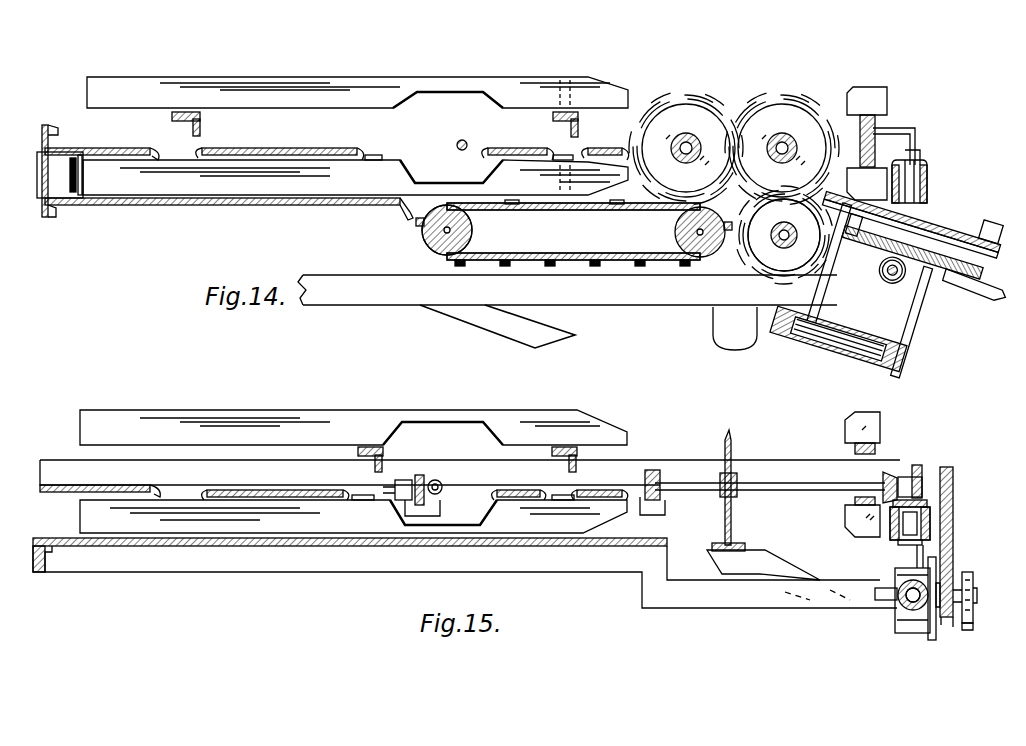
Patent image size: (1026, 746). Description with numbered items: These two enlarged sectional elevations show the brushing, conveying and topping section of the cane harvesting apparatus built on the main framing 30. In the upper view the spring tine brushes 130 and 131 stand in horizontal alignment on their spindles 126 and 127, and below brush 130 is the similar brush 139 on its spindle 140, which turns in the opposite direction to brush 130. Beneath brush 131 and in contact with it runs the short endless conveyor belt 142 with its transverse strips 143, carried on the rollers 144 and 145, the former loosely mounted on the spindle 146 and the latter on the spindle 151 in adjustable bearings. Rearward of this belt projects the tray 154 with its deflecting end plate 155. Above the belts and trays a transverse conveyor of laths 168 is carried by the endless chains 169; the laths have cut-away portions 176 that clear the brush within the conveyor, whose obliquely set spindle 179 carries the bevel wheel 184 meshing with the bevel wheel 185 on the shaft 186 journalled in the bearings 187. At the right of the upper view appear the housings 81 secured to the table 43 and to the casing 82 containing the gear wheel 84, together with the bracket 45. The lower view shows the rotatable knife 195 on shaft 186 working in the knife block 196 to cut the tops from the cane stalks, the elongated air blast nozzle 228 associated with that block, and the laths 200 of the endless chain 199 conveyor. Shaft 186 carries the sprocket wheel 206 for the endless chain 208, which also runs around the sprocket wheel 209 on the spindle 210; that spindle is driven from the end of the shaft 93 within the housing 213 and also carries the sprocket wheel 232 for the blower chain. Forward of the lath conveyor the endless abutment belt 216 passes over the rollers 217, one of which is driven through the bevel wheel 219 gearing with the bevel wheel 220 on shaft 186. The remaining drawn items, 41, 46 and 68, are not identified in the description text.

In FIG. 14, the main framing 30 is at (377, 289).
In FIG. 15, the main framing 30 is at (267, 558).
In FIG. 14, the pointed bar 41 is at (977, 296).
In FIG. 14, the table 43 is at (977, 223).
In FIG. 14, the bracket 45 is at (927, 265).
In FIG. 14, the shaft 46 is at (892, 282).
In FIG. 15, the shaft 46 is at (900, 604).
In FIG. 14, the rail 68 is at (920, 215).
In FIG. 14, the housing 81 is at (830, 296).
In FIG. 14, the casing 82 is at (893, 352).
In FIG. 14, the gear wheel 84 is at (810, 348).
In FIG. 14, the shaft 93 is at (852, 283).
In FIG. 15, the shaft 93 is at (911, 600).
In FIG. 14, the spindle 126 is at (784, 140).
In FIG. 14, the spindle 127 is at (690, 140).
In FIG. 14, the spring tine brush 130 is at (815, 103).
In FIG. 14, the spring tine brush 131 is at (673, 99).
In FIG. 14, the brush 139 is at (760, 265).
In FIG. 14, the spindle 140 is at (770, 240).
In FIG. 14, the endless conveyor belt 142 is at (605, 208).
In FIG. 14, the transverse strips 143 is at (550, 262).
In FIG. 14, the roller 144 is at (684, 232).
In FIG. 14, the roller 145 is at (472, 233).
In FIG. 14, the spindle 146 is at (694, 256).
In FIG. 14, the spindle 151 is at (440, 234).
In FIG. 14, the tray 154 is at (217, 205).
In FIG. 14, the deflecting end plate 155 is at (82, 180).
In FIG. 14, the laths 168 is at (103, 92).
In FIG. 15, the laths 168 is at (113, 425).
In FIG. 14, the endless chains 169 is at (172, 113).
In FIG. 15, the endless chains 169 is at (567, 445).
In FIG. 14, the cut-away portions 176 is at (422, 102).
In FIG. 15, the cut-away portions 176 is at (435, 430).
In FIG. 15, the spindle 179 is at (438, 485).
In FIG. 14, the bevel wheel 184 is at (465, 140).
In FIG. 15, the bevel wheel 184 is at (441, 494).
In FIG. 15, the bevel wheel 185 is at (419, 474).
In FIG. 15, the shaft 186 is at (692, 483).
In FIG. 15, the bearings 187 is at (642, 470).
In FIG. 15, the rotatable knife 195 is at (732, 432).
In FIG. 15, the knife block 196 is at (730, 543).
In FIG. 14, the endless chain 199 is at (880, 124).
In FIG. 14, the laths 200 is at (867, 92).
In FIG. 15, the laths 200 is at (857, 425).
In FIG. 15, the sprocket wheel 206 is at (952, 480).
In FIG. 15, the endless chain 208 is at (953, 557).
In FIG. 15, the sprocket wheel 209 is at (955, 618).
In FIG. 15, the spindle 210 is at (889, 590).
In FIG. 15, the housing 213 is at (897, 623).
In FIG. 14, the endless abutment belt 216 is at (915, 176).
In FIG. 15, the endless abutment belt 216 is at (928, 532).
In FIG. 15, the rollers 217 is at (912, 522).
In FIG. 15, the bevel wheel 219 is at (928, 504).
In FIG. 15, the bevel wheel 220 is at (880, 477).
In FIG. 15, the elongated air blast nozzle 228 is at (712, 552).
In FIG. 15, the sprocket wheel 232 is at (968, 622).